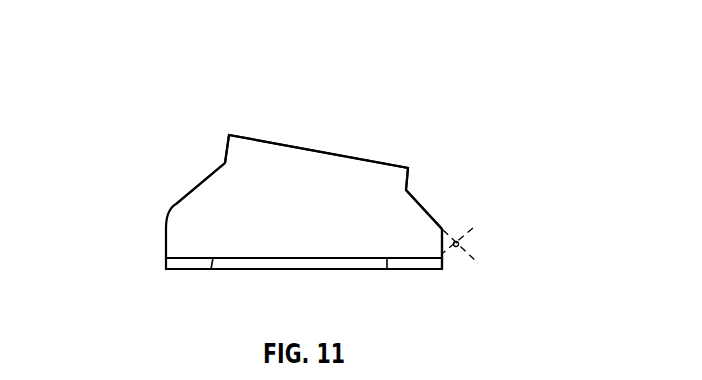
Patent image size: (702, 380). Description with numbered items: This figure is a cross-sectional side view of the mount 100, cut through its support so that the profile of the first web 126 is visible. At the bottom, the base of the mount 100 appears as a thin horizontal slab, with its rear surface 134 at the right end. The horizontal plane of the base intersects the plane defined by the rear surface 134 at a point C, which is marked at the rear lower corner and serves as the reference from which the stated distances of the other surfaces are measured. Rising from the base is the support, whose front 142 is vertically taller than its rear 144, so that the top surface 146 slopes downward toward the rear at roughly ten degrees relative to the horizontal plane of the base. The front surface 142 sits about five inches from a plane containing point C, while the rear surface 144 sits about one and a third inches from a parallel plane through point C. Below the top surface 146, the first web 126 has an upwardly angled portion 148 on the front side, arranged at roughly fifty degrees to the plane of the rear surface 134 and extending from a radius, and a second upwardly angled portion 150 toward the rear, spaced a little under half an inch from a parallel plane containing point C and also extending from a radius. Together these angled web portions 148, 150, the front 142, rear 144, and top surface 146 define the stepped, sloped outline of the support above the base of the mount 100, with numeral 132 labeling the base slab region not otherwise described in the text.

The mount 100 is at (448, 58).
The first web 126 is at (258, 228).
The base plate 132 is at (166, 262).
The rear surface of the base 134 is at (443, 262).
The front surface of the support 142 is at (225, 152).
The rear surface of the support 144 is at (410, 180).
The top surface of the support 146 is at (385, 163).
The upwardly angled portion of web 148 is at (188, 193).
The upwardly angled portion of web 150 is at (418, 206).
The point C is at (462, 244).